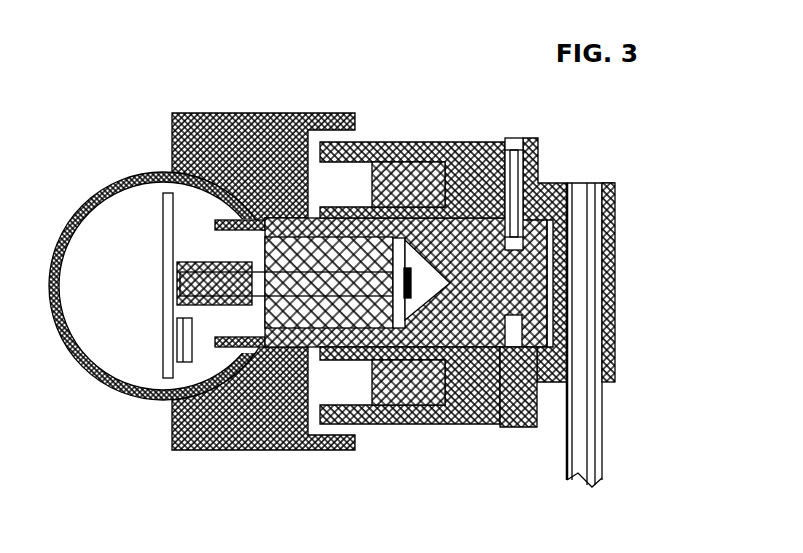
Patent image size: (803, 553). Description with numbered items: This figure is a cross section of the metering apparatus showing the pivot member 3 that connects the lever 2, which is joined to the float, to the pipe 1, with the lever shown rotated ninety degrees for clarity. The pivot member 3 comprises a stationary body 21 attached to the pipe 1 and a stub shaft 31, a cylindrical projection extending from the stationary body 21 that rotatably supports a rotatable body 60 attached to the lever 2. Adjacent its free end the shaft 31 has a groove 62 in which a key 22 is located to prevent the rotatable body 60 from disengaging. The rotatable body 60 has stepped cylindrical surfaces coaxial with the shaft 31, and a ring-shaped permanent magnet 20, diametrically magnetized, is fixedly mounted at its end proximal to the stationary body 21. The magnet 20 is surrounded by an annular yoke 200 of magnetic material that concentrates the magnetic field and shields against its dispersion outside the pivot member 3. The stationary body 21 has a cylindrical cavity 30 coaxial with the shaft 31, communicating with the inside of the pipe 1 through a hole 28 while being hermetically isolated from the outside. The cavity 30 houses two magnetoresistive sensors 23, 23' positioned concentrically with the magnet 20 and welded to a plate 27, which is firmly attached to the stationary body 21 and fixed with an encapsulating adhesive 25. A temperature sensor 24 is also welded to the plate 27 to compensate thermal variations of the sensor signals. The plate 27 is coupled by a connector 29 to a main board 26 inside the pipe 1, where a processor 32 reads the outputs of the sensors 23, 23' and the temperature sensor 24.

The pipe 1 is at (118, 180).
The lever 2 is at (593, 432).
The pivot member 3 is at (612, 155).
The ring-shaped permanent magnet 20 is at (450, 158).
The stationary body 21 is at (288, 117).
The key 22 is at (517, 165).
The magnetoresistive sensor 23 is at (430, 279).
The magnetoresistive sensor 23' is at (458, 264).
The temperature sensor 24 is at (436, 281).
The encapsulating adhesive 25 is at (298, 348).
The main board 26 is at (168, 252).
The plate 27 is at (406, 314).
The hole 28 is at (258, 217).
The connector 29 is at (218, 264).
The cylindrical cavity 30 is at (413, 300).
The stub shaft 31 is at (513, 283).
The processor 32 is at (183, 343).
The rotatable body 60 is at (518, 418).
The groove 62 is at (513, 327).
The annular yoke 200 is at (400, 142).